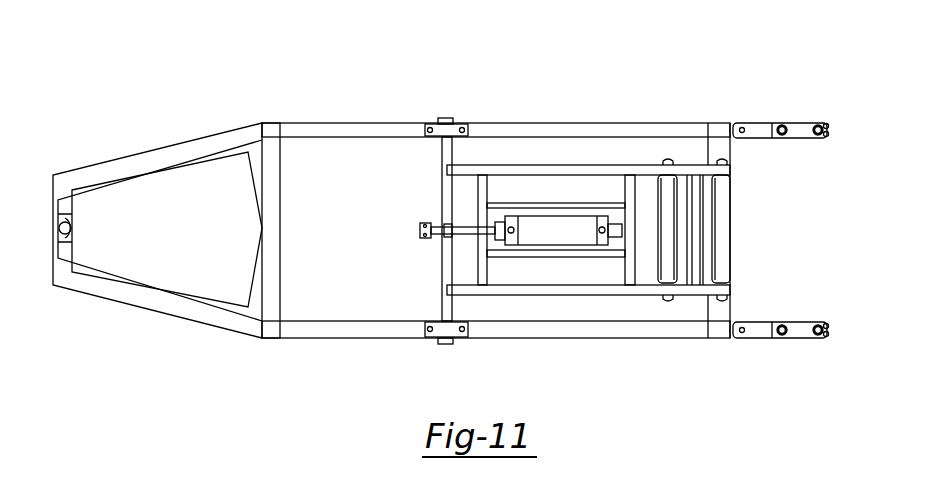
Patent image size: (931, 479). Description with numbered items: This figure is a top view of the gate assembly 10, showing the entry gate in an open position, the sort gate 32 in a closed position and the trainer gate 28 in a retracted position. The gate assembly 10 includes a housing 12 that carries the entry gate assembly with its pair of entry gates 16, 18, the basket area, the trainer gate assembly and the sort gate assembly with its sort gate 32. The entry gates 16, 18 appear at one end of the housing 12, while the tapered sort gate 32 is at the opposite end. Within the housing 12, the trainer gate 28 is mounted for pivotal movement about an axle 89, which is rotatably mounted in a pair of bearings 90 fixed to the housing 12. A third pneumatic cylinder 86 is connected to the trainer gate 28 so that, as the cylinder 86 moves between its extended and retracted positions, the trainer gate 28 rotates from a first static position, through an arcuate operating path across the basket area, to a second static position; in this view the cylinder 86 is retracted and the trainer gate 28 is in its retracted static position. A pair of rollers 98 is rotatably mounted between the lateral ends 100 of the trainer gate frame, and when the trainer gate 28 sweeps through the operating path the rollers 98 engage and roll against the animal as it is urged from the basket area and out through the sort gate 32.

The gate assembly 10 is at (754, 90).
The housing 12 is at (346, 122).
The entry gate 16 is at (798, 322).
The entry gate 18 is at (798, 138).
The trainer gate 28 is at (563, 168).
The sort gate 32 is at (140, 190).
The third pneumatic cylinder 86 is at (566, 241).
The axle 89 is at (445, 152).
The bearings 90 is at (453, 120).
The rollers 98 is at (667, 228).
The lateral ends 100 is at (637, 165).